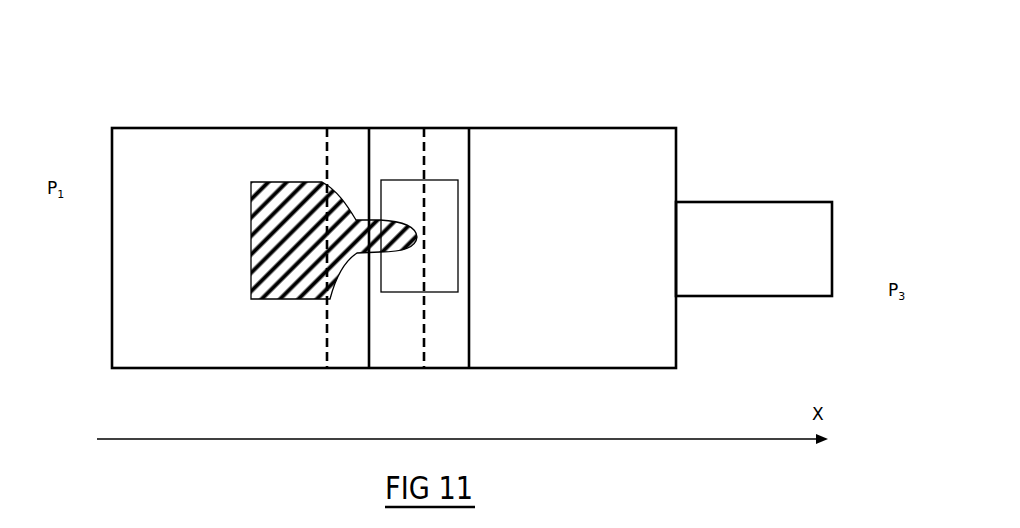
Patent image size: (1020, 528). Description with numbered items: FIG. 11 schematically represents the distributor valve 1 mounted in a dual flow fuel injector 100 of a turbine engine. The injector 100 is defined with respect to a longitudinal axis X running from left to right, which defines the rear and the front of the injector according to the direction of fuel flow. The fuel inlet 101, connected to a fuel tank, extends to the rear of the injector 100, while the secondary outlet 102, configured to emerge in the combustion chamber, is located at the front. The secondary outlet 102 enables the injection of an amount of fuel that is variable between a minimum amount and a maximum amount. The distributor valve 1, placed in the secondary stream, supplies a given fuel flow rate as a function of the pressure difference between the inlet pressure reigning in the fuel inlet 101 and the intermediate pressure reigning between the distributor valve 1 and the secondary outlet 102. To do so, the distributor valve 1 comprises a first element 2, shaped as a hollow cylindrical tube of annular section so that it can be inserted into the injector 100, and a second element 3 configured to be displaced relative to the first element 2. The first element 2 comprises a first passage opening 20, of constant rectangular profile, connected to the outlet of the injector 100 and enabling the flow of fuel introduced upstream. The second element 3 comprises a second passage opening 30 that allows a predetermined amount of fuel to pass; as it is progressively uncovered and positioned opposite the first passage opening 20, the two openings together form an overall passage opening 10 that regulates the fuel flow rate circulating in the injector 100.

The distributor valve 1 is at (447, 103).
The first element 2 is at (470, 163).
The second element 3 is at (325, 152).
The overall passage opening 10 is at (398, 238).
The first passage opening 20 is at (447, 294).
The second passage opening 30 is at (288, 284).
The injector 100 is at (474, 225).
The fuel inlet 101 is at (110, 330).
The secondary outlet 102 is at (833, 237).